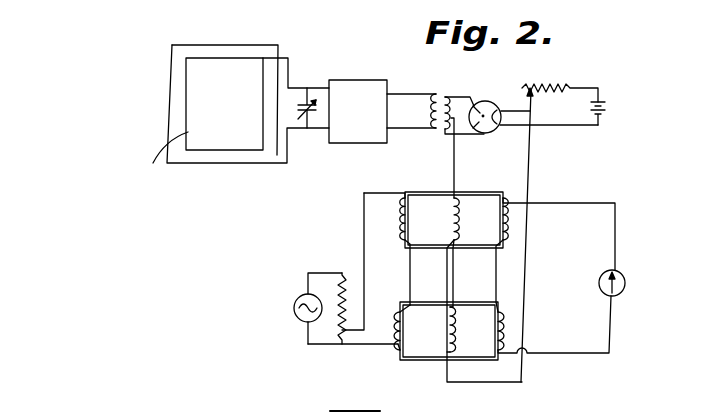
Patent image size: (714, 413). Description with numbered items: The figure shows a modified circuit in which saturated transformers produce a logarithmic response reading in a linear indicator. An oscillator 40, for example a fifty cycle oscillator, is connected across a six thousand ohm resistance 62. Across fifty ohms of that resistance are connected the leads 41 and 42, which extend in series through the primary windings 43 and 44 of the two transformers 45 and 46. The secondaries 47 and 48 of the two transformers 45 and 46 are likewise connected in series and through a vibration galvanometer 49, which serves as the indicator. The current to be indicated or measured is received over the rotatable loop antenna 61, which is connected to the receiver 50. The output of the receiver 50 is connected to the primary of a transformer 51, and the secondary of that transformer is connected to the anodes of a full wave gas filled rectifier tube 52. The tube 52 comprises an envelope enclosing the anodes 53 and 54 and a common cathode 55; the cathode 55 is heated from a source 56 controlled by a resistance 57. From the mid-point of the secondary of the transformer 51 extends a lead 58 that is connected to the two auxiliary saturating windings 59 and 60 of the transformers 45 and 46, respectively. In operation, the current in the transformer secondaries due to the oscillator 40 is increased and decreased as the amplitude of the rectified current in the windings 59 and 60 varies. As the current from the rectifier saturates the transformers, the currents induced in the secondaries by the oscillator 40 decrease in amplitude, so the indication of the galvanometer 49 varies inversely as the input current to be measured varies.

The oscillator 40 is at (297, 310).
The lead 41 is at (357, 346).
The lead 42 is at (369, 323).
The primary winding 43 is at (400, 223).
The primary winding 44 is at (400, 324).
The transformer 45 is at (440, 200).
The transformer 46 is at (437, 294).
The secondary 47 is at (503, 243).
The secondary 48 is at (501, 330).
The vibration galvanometer 49 is at (625, 287).
The receiver 50 is at (352, 82).
The transformer 51 is at (456, 85).
The tube 52 is at (493, 116).
The anode 53 is at (471, 101).
The anode 54 is at (484, 134).
The cathode 55 is at (497, 126).
The source 56 is at (605, 110).
The resistance 57 is at (543, 88).
The lead 58 is at (455, 173).
The auxiliary saturating winding 59 is at (459, 224).
The auxiliary saturating winding 60 is at (456, 333).
The loop antenna 61 is at (282, 50).
The resistance 62 is at (342, 276).